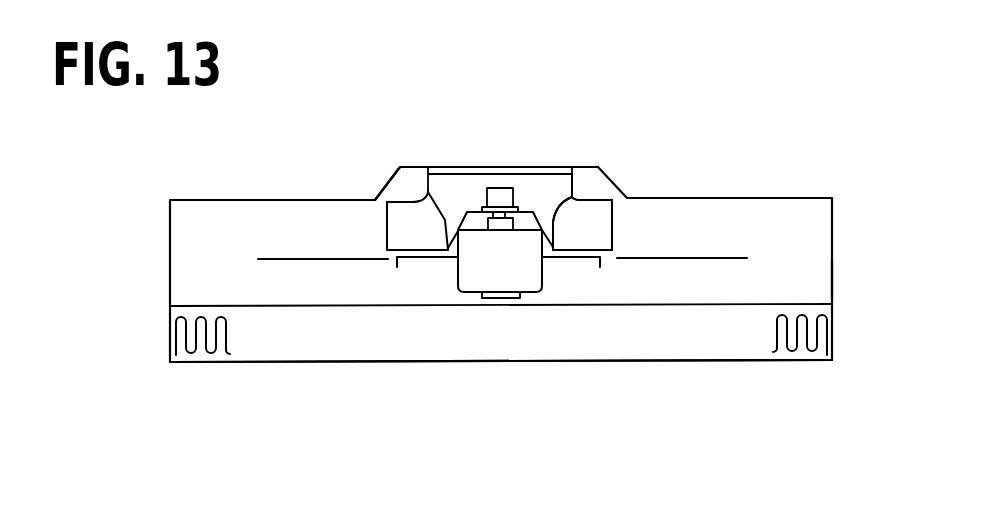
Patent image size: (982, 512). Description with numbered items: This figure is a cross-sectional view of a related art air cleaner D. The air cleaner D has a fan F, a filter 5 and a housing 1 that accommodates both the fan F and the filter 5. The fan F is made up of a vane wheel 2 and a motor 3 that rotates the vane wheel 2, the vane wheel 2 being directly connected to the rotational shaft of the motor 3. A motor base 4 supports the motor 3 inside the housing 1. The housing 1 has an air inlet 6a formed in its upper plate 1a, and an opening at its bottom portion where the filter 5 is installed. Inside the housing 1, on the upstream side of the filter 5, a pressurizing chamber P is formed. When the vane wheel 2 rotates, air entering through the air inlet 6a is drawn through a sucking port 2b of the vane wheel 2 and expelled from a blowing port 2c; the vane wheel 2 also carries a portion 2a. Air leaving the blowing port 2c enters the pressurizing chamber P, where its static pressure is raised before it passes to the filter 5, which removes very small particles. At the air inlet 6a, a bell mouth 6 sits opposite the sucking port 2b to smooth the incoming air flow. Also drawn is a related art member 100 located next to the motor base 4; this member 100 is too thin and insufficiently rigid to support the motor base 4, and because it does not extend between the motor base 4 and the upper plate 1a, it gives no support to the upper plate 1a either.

The housing 1 is at (738, 197).
The upper plate 1a is at (782, 197).
The vane wheel 2 is at (560, 208).
The arm portion 2a is at (588, 200).
The sucking port 2b is at (572, 168).
The blowing port 2c is at (617, 223).
The motor 3 is at (533, 297).
The motor base 4 is at (577, 263).
The filter 5 is at (303, 361).
The bell mouth 6 is at (380, 196).
The air inlet 6a is at (557, 167).
The related art member 100 is at (347, 272).
The air cleaner D is at (272, 200).
The fan F is at (605, 242).
The pressurizing chamber P is at (820, 278).